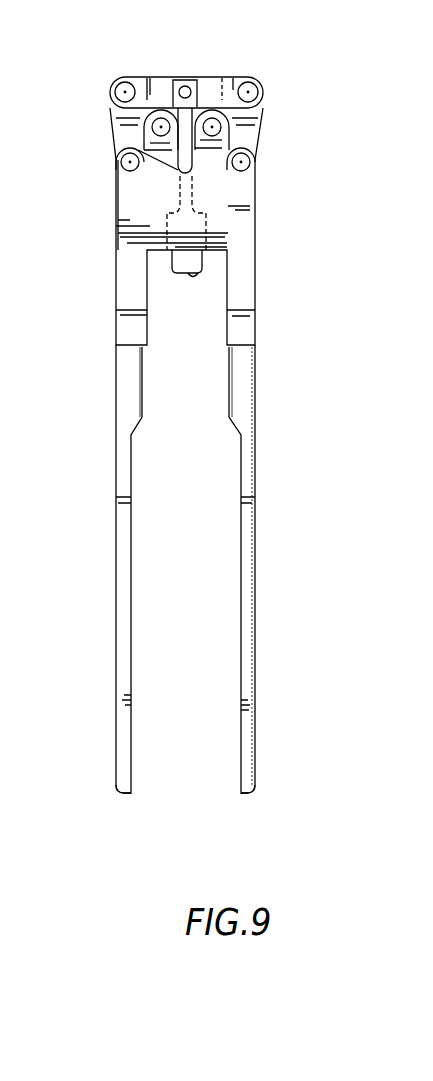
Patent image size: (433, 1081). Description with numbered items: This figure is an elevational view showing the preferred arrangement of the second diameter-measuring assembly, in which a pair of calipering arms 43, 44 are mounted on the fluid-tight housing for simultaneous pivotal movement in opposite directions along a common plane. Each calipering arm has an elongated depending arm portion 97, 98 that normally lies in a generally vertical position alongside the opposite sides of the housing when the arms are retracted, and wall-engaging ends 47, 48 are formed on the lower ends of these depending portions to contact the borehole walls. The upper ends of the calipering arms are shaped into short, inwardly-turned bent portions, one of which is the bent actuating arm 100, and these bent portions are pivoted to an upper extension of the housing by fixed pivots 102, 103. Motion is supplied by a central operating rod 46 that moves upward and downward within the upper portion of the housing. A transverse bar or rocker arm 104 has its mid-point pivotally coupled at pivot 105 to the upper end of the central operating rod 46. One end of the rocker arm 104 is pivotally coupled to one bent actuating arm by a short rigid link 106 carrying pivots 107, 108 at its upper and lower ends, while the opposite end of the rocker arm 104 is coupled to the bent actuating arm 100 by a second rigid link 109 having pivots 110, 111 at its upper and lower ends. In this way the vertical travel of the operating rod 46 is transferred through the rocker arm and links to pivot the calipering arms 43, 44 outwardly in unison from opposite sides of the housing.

The calipering arm 43 is at (293, 470).
The calipering arm 44 is at (73, 468).
The central operating rod 46 is at (190, 263).
The wall-engaging end 47 is at (280, 807).
The wall-engaging end 48 is at (123, 790).
The depending arm portion 97 is at (287, 670).
The depending arm portion 98 is at (127, 671).
The bent actuating arm portion 100 is at (212, 193).
The fixed pivot 102 is at (153, 128).
The fixed pivot 103 is at (212, 128).
The rocker arm 104 is at (147, 85).
The pivot 105 is at (184, 87).
The rigid link 106 is at (252, 118).
The pivot 107 is at (249, 89).
The pivot 108 is at (243, 163).
The second rigid link 109 is at (122, 118).
The pivot 110 is at (122, 90).
The pivot 111 is at (127, 165).